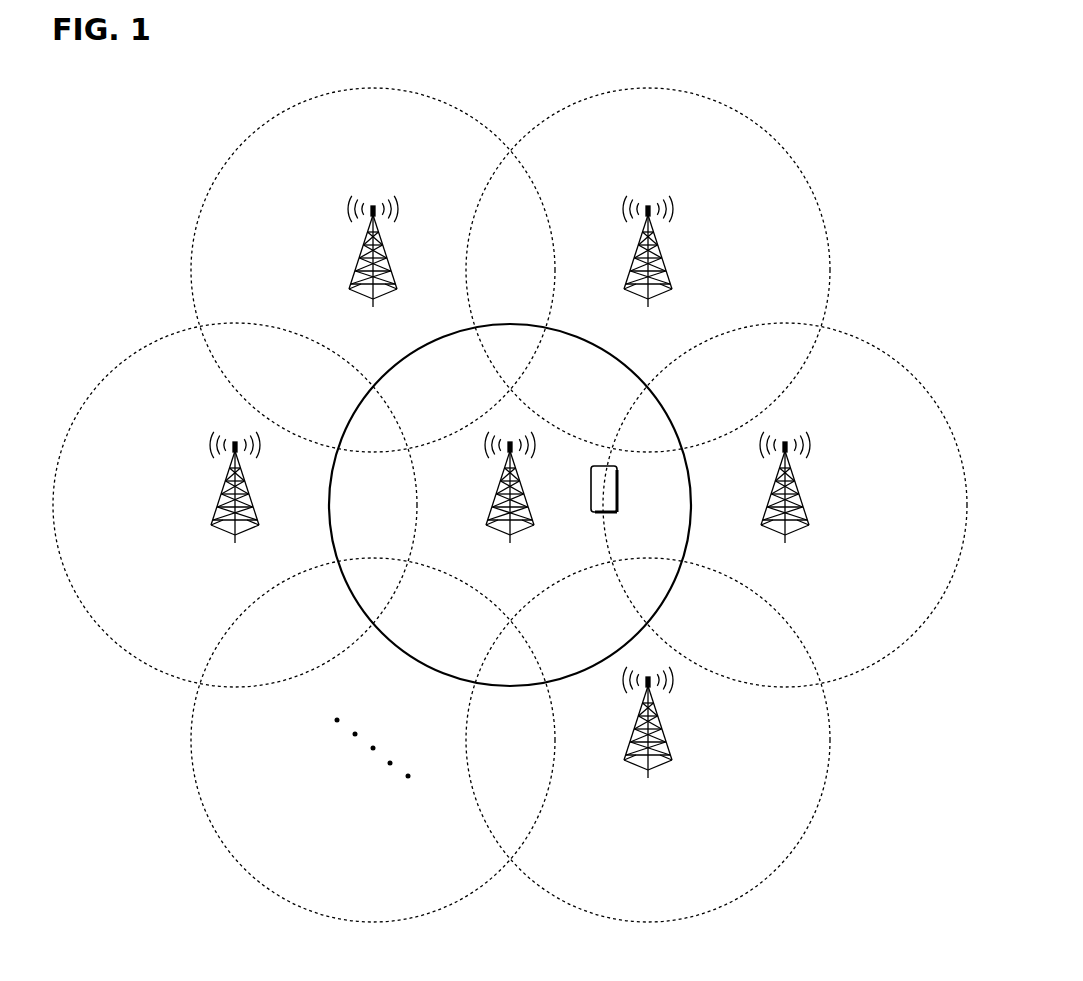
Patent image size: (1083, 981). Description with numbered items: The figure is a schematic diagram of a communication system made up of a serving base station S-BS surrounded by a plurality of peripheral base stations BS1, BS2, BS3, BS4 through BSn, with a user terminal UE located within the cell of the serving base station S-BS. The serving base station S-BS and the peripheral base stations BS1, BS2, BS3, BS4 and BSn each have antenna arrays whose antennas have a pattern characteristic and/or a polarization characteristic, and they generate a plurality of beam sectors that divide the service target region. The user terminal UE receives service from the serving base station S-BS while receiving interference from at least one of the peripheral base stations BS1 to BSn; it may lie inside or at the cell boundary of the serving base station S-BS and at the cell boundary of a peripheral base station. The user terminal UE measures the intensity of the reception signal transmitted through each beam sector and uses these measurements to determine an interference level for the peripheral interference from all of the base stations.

The serving base station S-BS is at (510, 505).
The user terminal UE is at (604, 505).
The peripheral base station BS1 is at (785, 505).
The peripheral base station BS2 is at (648, 270).
The peripheral base station BS3 is at (373, 270).
The peripheral base station BS4 is at (235, 505).
The peripheral base station BSn is at (648, 740).